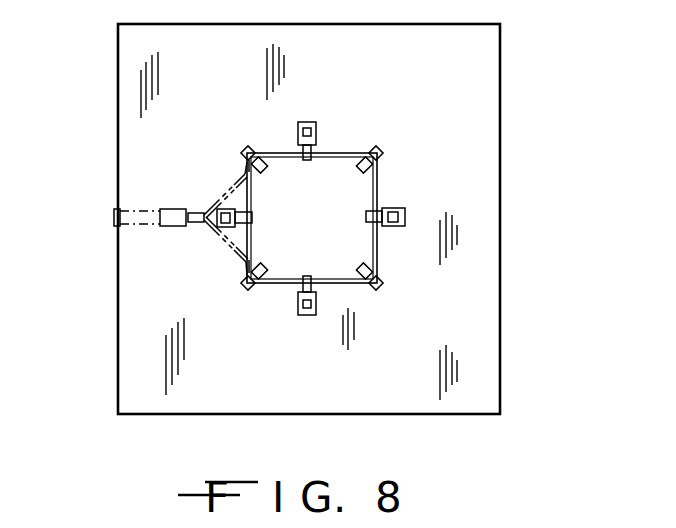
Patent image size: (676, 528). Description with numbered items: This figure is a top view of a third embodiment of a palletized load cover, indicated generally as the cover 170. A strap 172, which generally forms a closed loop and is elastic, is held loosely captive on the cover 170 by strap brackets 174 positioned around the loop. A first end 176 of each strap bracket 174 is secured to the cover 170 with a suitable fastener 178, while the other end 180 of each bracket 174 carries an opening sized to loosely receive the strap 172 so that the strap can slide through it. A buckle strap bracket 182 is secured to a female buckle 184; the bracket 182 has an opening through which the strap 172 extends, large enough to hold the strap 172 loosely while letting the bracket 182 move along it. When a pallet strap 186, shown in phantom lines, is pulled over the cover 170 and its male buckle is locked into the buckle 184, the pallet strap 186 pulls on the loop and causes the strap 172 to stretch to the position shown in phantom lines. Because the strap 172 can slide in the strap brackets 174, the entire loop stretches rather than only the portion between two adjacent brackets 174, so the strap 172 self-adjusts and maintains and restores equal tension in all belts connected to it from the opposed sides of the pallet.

The cover 170 is at (512, 159).
The strap 172 is at (380, 190).
The strap brackets 174 is at (377, 153).
The first end 176 is at (281, 250).
The fastener 178 is at (358, 261).
The other end 180 is at (378, 282).
The buckle strap bracket 182 is at (283, 215).
The buckle 184 is at (320, 122).
The pallet strap 186 is at (136, 226).